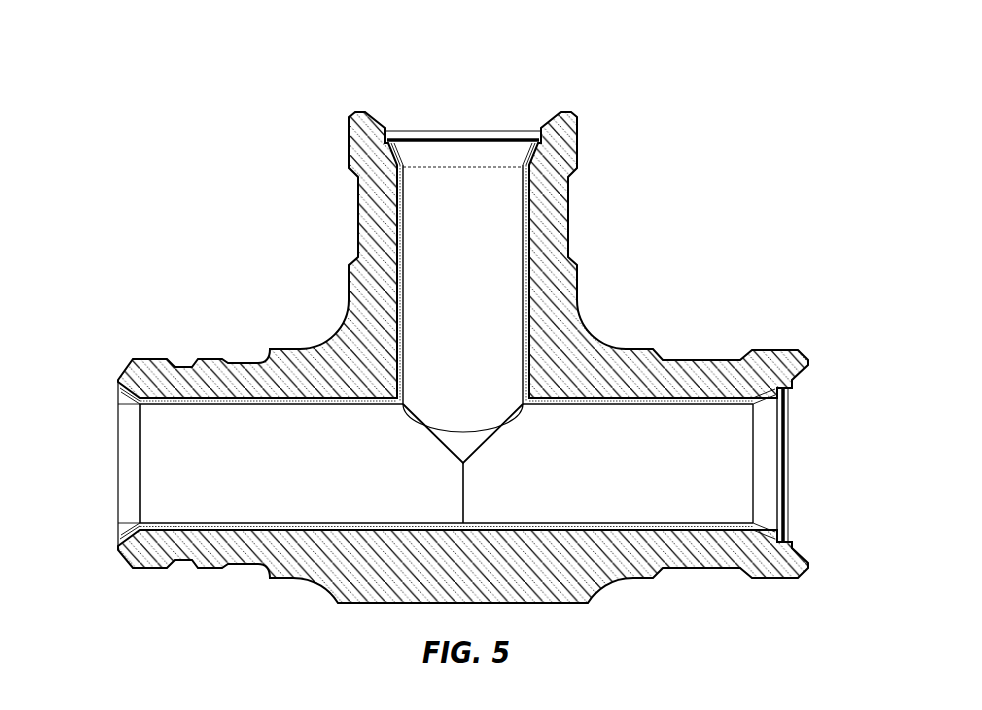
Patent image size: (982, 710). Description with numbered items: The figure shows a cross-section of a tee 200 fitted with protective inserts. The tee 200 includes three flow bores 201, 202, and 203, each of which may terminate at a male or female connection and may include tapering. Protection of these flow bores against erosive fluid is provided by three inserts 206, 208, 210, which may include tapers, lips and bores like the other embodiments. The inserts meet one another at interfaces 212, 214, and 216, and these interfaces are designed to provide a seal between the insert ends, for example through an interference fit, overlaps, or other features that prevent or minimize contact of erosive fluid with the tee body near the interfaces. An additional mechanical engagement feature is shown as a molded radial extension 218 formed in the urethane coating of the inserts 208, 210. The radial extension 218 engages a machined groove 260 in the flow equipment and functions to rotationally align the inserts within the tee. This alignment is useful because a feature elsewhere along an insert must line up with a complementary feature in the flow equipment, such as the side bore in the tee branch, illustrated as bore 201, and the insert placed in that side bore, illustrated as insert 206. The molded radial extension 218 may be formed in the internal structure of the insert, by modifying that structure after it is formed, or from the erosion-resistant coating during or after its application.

The tee 200 is at (180, 214).
The flow bore 201 is at (128, 485).
The flow bore 202 is at (763, 487).
The flow bore 203 is at (432, 155).
The insert 206 is at (293, 398).
The insert 208 is at (672, 398).
The insert 210 is at (398, 238).
The interface 212 is at (463, 503).
The interface 214 is at (490, 438).
The interface 216 is at (423, 418).
The molded radial extension 218 is at (136, 390).
The machined groove 260 is at (157, 397).